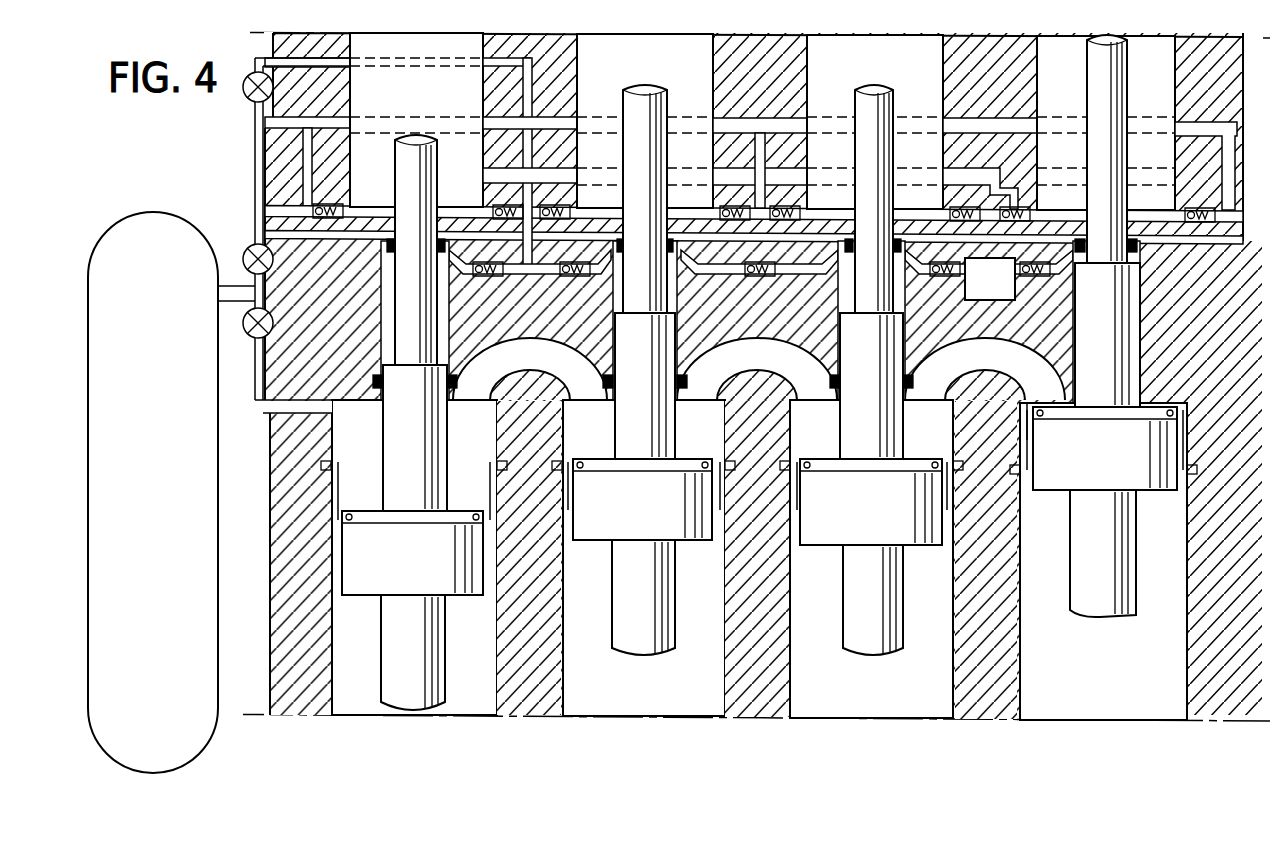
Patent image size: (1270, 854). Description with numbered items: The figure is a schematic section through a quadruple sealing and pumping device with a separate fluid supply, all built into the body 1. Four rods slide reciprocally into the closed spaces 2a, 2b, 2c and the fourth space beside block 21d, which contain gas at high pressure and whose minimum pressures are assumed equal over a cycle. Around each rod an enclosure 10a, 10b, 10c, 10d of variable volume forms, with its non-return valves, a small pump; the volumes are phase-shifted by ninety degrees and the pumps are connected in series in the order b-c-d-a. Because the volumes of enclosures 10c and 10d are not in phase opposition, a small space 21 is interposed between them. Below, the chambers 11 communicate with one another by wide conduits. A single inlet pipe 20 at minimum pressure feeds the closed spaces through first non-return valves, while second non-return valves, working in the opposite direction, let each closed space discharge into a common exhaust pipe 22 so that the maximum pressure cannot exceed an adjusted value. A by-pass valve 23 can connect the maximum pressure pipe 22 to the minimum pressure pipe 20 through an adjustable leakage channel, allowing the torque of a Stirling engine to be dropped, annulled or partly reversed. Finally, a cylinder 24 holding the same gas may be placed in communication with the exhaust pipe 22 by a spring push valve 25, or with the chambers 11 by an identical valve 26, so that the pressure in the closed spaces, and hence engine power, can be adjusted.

The body 1 is at (1198, 282).
The closed space 2a is at (458, 100).
The closed space 2b is at (677, 92).
The closed space 2c is at (918, 85).
The fourth cylinder chamber 21d is at (1152, 80).
The enclosure 10a is at (388, 254).
The enclosure 10b is at (618, 256).
The enclosure 10c is at (848, 256).
The enclosure 10d is at (1187, 257).
The chamber 11 is at (364, 484).
The inlet pipe 20 is at (997, 177).
The small space 21 is at (1004, 293).
The exhaust pipe 22 is at (1190, 128).
The by-pass valve 23 is at (243, 79).
The cylinder 24 is at (140, 240).
The valve 25 is at (244, 250).
The valve 26 is at (246, 339).